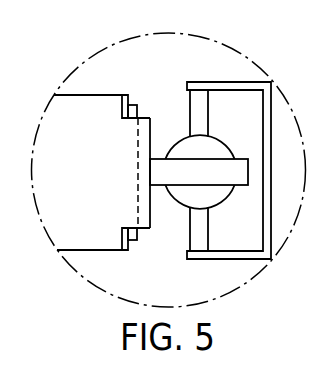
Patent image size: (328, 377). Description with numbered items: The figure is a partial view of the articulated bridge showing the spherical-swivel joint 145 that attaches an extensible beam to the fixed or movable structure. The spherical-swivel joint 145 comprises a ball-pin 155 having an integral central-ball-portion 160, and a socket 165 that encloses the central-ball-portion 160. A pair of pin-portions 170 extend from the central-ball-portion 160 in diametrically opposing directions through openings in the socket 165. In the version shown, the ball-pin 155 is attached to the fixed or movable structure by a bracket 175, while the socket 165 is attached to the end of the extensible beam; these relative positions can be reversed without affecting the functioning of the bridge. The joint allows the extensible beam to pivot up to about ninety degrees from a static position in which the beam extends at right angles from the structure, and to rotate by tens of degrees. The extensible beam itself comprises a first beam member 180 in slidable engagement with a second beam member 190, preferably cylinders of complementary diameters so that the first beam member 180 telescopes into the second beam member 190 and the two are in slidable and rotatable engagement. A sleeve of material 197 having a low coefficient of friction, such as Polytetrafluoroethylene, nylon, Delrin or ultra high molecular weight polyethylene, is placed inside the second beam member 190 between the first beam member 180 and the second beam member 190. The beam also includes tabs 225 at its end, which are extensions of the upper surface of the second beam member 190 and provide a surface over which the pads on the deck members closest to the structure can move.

The spherical-swivel joint 145 is at (239, 153).
The ball-pin 155 is at (172, 250).
The central-ball-portion 160 is at (219, 203).
The socket 165 is at (236, 159).
The pin-portions 170 is at (210, 250).
The bracket 175 is at (272, 157).
The first beam member 180 is at (133, 105).
The second beam member 190 is at (97, 95).
The sleeve of material 197 is at (130, 250).
The tabs 225 is at (150, 118).